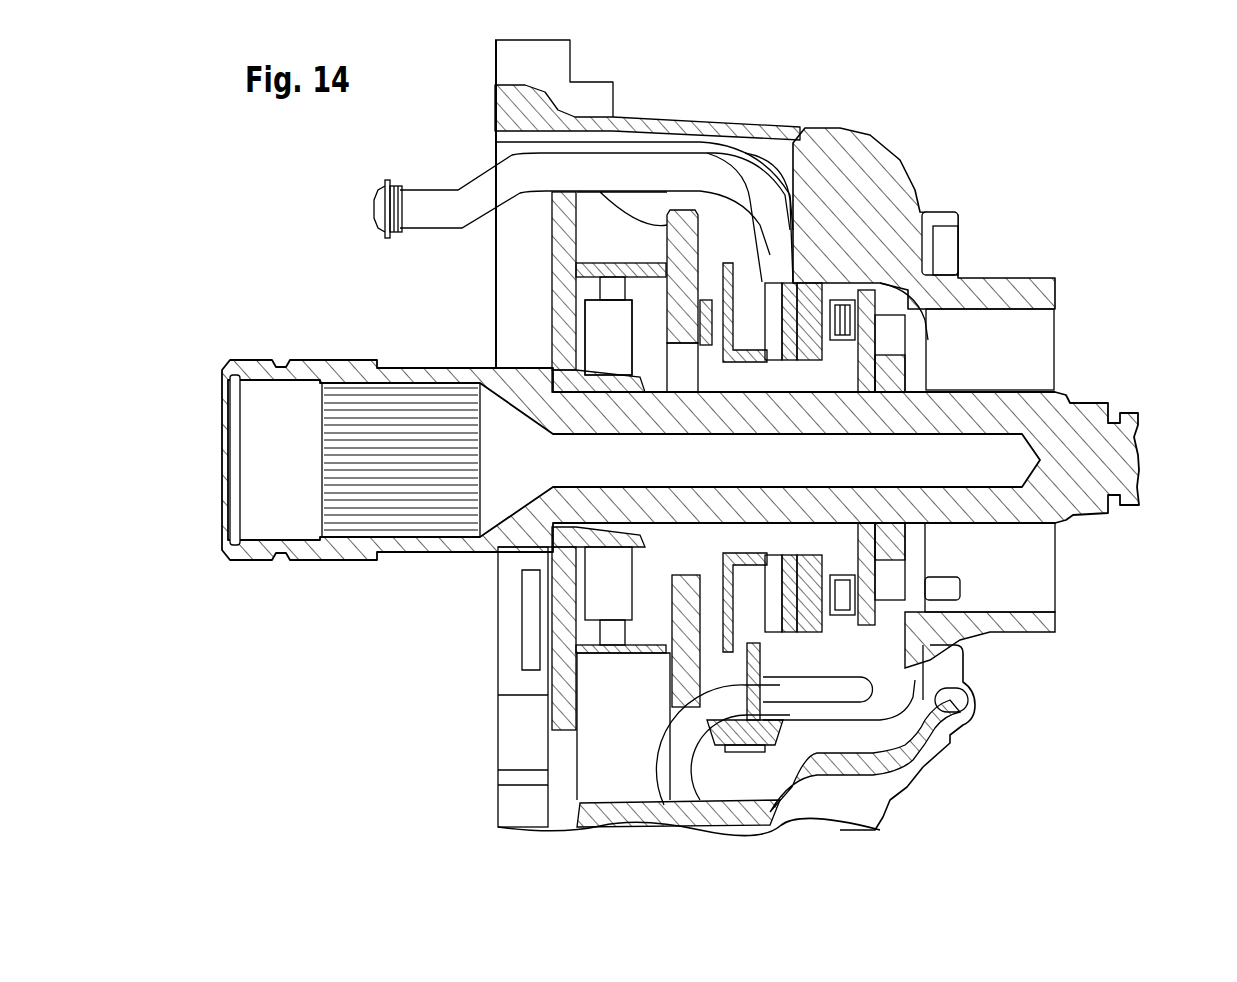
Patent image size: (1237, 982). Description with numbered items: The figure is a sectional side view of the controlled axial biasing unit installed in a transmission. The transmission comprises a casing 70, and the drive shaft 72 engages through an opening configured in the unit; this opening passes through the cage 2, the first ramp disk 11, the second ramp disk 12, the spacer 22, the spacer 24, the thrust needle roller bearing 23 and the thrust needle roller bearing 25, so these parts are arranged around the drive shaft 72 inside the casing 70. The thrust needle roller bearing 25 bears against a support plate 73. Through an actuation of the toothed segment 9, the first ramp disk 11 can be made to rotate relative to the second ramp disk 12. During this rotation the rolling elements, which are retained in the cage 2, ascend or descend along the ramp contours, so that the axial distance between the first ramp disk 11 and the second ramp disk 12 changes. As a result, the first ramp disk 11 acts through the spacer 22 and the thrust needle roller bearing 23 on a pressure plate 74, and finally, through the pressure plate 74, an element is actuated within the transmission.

The cage 2 is at (786, 282).
The toothed segment 9 is at (757, 722).
The first ramp disk 11 is at (772, 282).
The second ramp disk 12 is at (795, 283).
The spacer 22 is at (727, 263).
The thrust needle roller bearing 23 is at (703, 318).
The spacer 24 is at (832, 332).
The thrust needle roller bearing 25 is at (922, 265).
The casing 70 is at (870, 167).
The drive shaft 72 is at (1113, 460).
The support plate 73 is at (880, 354).
The pressure plate 74 is at (687, 327).